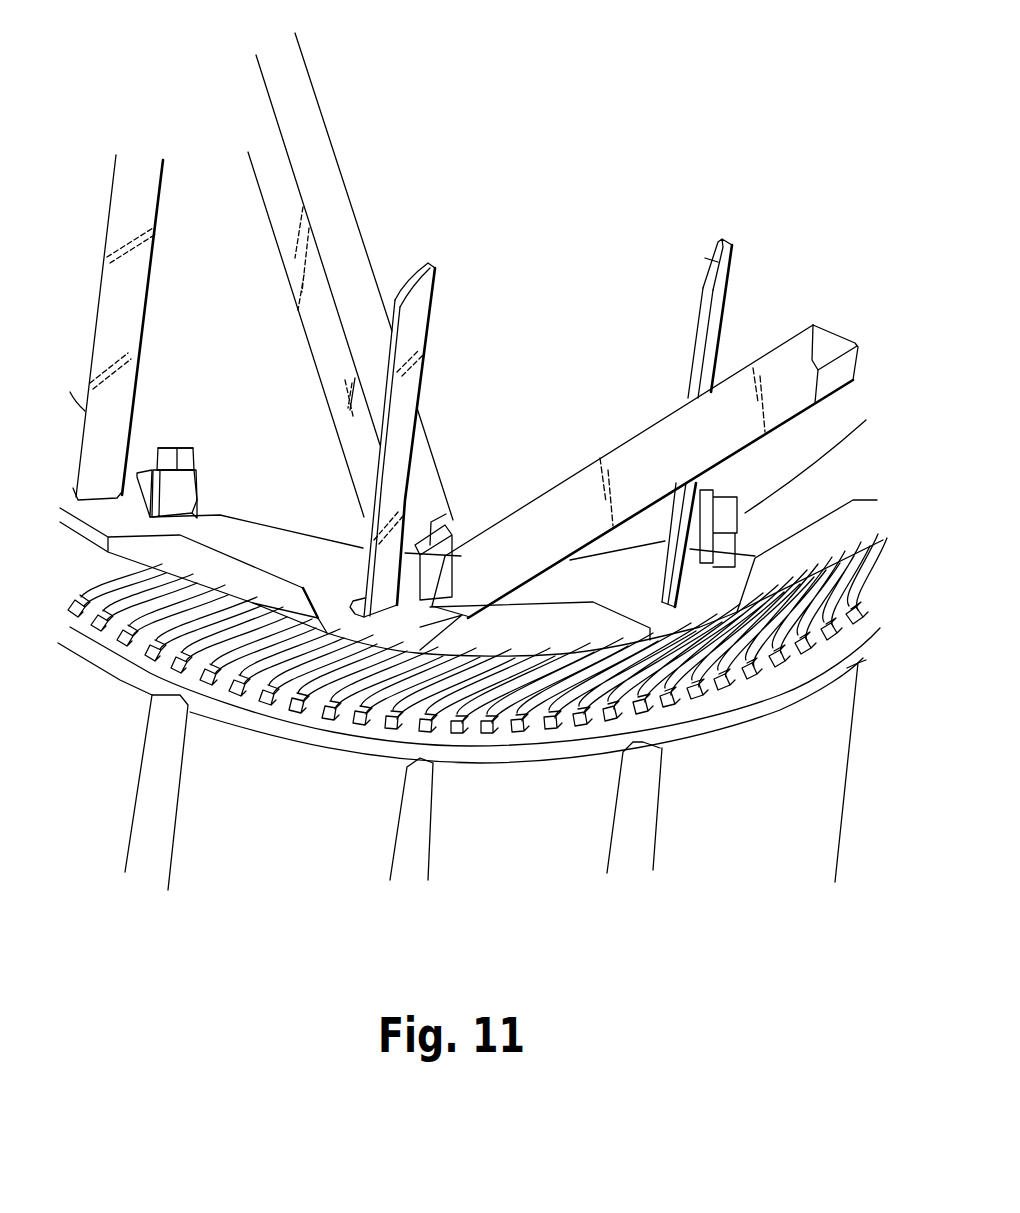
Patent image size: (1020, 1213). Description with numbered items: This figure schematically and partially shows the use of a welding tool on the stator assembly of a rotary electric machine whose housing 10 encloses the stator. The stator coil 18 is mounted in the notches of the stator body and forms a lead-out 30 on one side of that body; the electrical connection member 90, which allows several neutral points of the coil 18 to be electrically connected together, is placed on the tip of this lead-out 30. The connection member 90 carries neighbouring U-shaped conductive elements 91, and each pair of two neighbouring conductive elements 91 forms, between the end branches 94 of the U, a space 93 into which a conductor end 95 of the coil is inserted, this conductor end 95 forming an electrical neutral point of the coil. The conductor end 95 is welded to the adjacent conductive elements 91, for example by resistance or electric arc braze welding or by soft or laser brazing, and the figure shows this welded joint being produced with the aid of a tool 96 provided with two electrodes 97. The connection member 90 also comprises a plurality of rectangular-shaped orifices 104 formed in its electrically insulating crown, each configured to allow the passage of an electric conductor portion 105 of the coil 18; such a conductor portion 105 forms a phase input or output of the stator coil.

The housing 10 is at (242, 840).
The stator coil 18 is at (483, 707).
The lead-out 30 is at (600, 698).
The electrical connection member 90 is at (325, 565).
The conductive element 91 is at (198, 503).
The space 93 is at (453, 537).
The end branch 94 is at (182, 448).
The conductor end 95 is at (162, 445).
The tool 96 is at (320, 330).
The electrode 97 is at (327, 178).
The rectangular-shaped orifice 104 is at (350, 682).
The electric conductor portion 105 is at (435, 315).